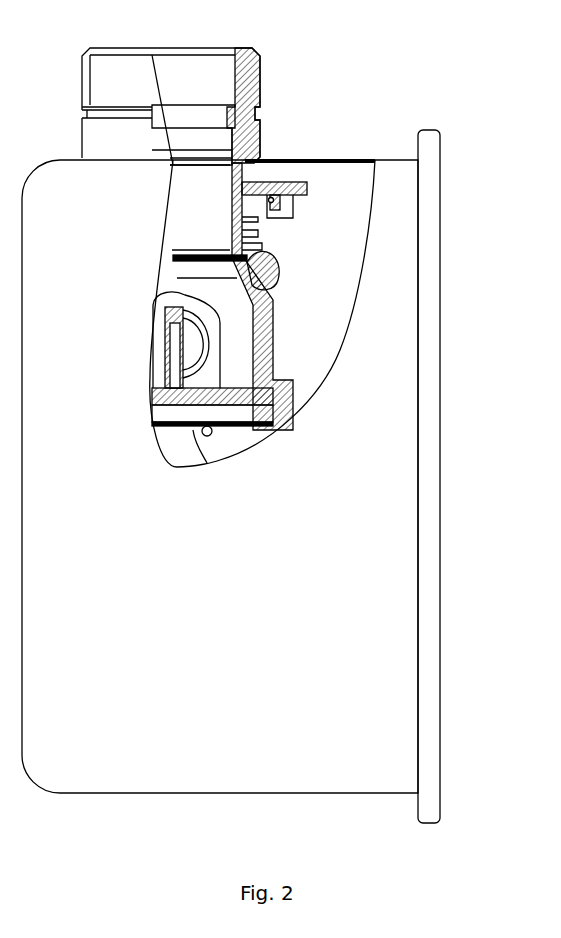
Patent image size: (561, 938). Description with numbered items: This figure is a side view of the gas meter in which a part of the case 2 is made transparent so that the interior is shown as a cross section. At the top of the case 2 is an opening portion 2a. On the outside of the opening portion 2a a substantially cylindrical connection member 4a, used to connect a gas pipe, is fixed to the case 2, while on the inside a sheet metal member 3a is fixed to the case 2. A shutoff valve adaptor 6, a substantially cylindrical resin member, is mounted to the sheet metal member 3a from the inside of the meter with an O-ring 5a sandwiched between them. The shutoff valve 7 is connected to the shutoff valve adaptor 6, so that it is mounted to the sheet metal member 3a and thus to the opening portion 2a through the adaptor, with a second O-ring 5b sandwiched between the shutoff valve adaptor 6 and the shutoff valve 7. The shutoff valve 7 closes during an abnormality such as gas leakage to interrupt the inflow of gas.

The case 2 is at (148, 765).
The opening portion 2a is at (174, 262).
The connection member 4a is at (250, 48).
The O-ring 5a is at (260, 160).
The sheet metal member 3a is at (280, 180).
The shutoff valve adaptor 6 is at (230, 185).
The O-ring 5b is at (230, 247).
The shutoff valve 7 is at (187, 340).